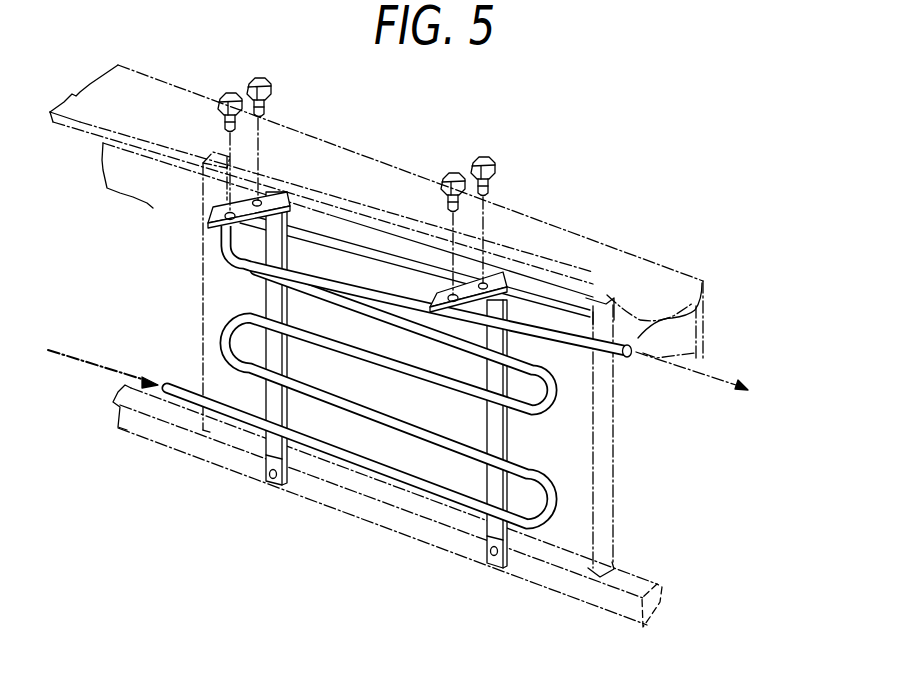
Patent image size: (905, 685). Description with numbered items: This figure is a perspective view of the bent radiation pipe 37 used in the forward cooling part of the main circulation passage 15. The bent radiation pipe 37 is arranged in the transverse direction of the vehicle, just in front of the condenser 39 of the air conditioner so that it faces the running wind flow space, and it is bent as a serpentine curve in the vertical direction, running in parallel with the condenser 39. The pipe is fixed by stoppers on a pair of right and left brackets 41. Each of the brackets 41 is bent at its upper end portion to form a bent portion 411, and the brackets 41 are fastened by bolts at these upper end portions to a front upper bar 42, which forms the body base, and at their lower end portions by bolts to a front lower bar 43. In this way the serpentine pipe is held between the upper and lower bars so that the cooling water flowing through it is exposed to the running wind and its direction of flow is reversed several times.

The main circulation passage 15 is at (728, 371).
The bent radiation pipe 37 is at (566, 386).
The condenser 39 is at (613, 507).
The brackets 41 is at (273, 302).
The bent portions 411 is at (212, 228).
The front upper bar 42 is at (703, 328).
The front lower bar 43 is at (663, 603).